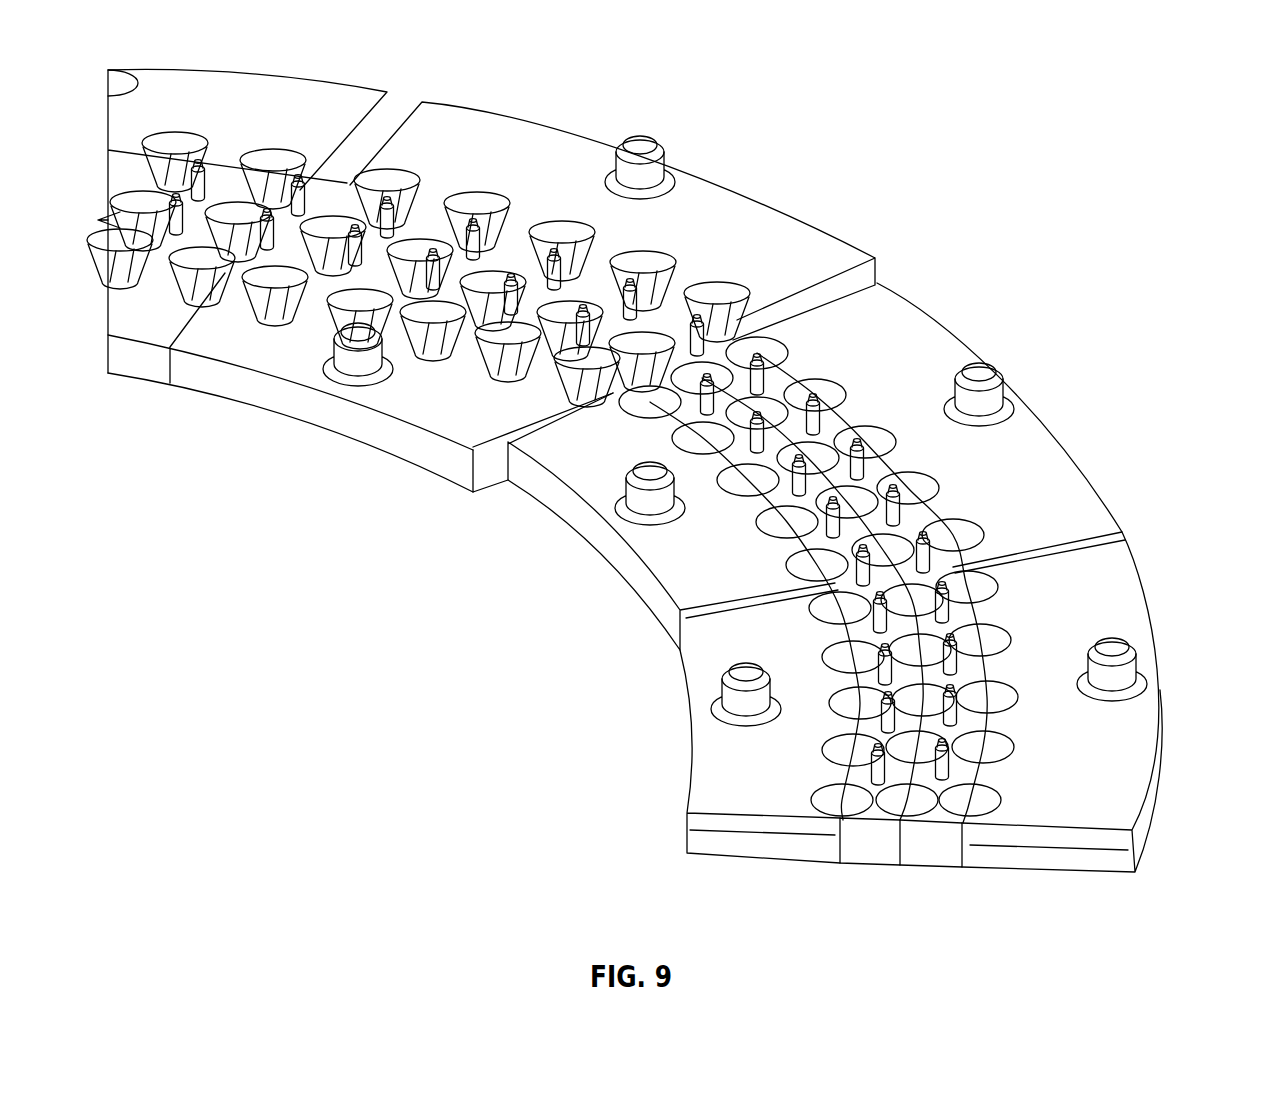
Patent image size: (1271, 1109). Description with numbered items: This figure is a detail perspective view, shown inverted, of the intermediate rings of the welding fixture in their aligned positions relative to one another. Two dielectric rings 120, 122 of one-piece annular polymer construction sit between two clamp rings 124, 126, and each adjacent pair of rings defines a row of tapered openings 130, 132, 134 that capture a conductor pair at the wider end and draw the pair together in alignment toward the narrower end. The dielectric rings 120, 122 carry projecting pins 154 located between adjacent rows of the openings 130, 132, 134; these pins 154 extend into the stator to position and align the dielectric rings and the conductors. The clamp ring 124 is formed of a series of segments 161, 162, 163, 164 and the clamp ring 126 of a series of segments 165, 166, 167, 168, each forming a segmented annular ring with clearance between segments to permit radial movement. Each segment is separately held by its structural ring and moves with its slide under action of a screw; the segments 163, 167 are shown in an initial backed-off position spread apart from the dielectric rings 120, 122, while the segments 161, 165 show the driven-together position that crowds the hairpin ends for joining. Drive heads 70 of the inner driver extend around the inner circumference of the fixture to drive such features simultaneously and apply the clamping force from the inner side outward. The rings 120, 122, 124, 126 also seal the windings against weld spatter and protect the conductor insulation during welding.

The drive heads 70 is at (641, 146).
The dielectric ring 120 is at (935, 847).
The dielectric ring 122 is at (870, 847).
The clamp ring 124 is at (1090, 847).
The clamp ring 126 is at (684, 823).
The opening 130 is at (992, 800).
The opening 132 is at (950, 762).
The opening 134 is at (820, 802).
The projecting pins 154 is at (903, 512).
The segment 161 is at (1079, 804).
The segment 162 is at (1043, 521).
The segment 163 is at (777, 268).
The segment 164 is at (340, 116).
The segment 165 is at (703, 804).
The segment 166 is at (677, 595).
The segment 167 is at (457, 432).
The segment 168 is at (175, 315).